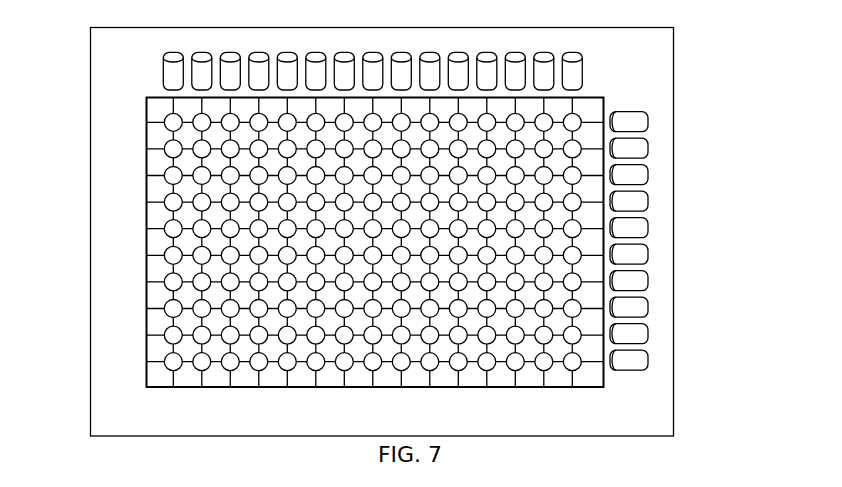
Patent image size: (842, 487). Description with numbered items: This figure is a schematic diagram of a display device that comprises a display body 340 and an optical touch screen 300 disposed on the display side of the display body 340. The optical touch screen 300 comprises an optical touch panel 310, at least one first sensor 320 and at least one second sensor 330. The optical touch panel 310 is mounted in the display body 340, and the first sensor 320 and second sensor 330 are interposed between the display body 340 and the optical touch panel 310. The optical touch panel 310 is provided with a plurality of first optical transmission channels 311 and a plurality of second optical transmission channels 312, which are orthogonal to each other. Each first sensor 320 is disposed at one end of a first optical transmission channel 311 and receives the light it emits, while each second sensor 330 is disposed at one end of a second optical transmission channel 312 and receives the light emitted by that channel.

The optical touch screen 300 is at (738, 28).
The optical touch panel 310 is at (388, 215).
The first optical transmission channel 311 is at (156, 122).
The second optical transmission channel 312 is at (162, 100).
The first sensor 320 is at (630, 145).
The second sensor 330 is at (583, 65).
The display body 340 is at (115, 252).